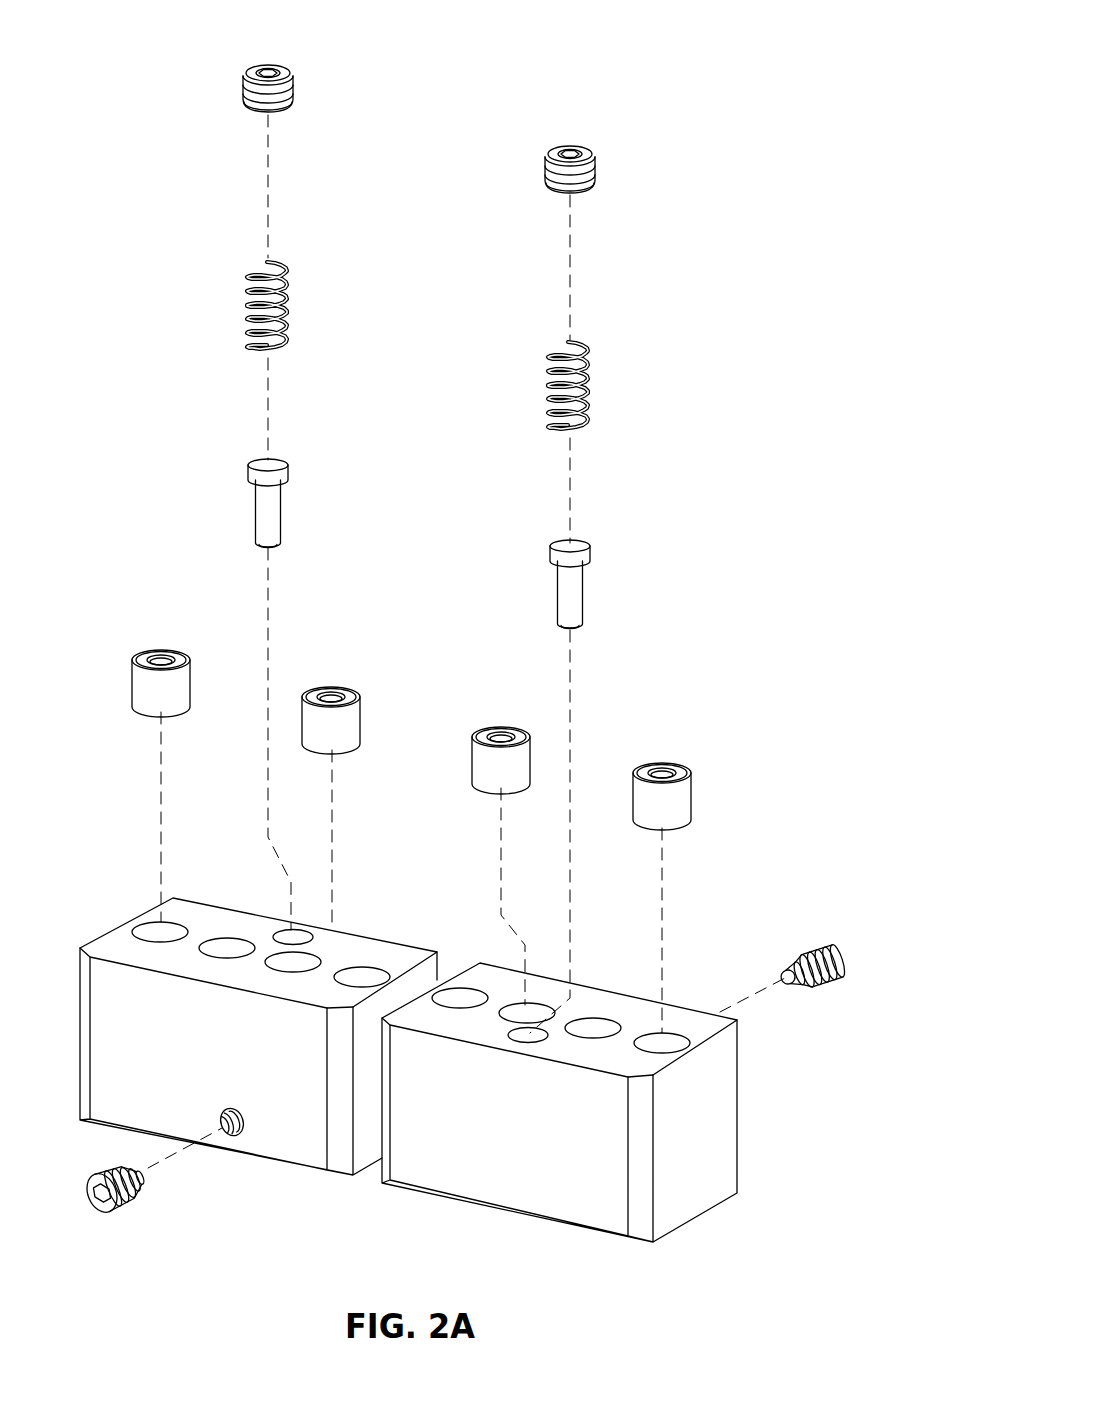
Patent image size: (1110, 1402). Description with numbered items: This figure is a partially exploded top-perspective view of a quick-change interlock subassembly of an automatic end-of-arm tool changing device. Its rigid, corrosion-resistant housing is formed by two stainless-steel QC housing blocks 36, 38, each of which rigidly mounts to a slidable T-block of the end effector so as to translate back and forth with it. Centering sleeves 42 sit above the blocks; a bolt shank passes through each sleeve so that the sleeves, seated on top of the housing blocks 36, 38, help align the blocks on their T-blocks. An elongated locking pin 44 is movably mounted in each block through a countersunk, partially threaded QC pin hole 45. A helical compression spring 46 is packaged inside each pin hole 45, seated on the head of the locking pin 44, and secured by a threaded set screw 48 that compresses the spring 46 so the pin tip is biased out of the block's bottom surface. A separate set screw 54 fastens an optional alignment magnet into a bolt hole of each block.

The QC housing block 36 is at (287, 1142).
The QC housing block 38 is at (585, 1210).
The centering sleeve 42 is at (132, 665).
The locking pin 44 is at (248, 463).
The QC pin hole 45 is at (283, 931).
The helical compression spring 46 is at (248, 270).
The threaded set screw 48 is at (243, 75).
The set screw 54 is at (803, 947).